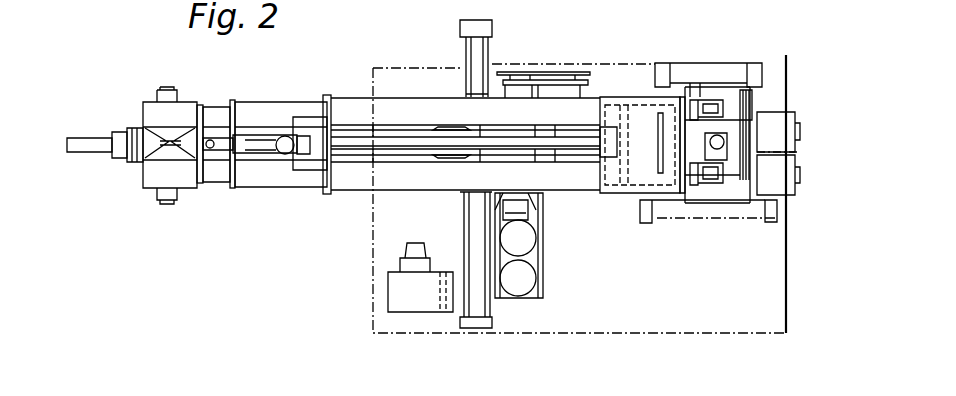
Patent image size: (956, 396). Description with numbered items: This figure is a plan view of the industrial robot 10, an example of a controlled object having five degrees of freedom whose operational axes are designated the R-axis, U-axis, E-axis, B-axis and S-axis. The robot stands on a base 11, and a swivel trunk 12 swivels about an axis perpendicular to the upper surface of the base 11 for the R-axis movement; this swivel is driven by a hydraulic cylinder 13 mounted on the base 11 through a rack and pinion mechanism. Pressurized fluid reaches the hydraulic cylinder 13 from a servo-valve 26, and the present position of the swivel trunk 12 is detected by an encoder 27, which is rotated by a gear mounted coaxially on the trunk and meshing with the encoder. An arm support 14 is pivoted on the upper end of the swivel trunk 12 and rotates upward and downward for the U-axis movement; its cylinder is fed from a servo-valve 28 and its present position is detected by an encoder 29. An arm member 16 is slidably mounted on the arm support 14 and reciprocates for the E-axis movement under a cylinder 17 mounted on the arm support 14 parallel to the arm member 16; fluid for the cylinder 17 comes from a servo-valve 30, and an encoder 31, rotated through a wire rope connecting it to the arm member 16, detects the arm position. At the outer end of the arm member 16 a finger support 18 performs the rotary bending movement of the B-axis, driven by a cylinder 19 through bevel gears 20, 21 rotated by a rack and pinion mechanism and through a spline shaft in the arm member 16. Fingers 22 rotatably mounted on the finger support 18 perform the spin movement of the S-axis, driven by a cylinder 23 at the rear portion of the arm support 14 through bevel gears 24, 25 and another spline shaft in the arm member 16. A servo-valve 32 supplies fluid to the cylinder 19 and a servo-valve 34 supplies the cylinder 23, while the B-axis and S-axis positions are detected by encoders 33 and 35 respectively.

The industrial robot 10 is at (519, 57).
The base 11 is at (632, 303).
The swivel trunk 12 is at (547, 160).
The hydraulic cylinder 13 is at (455, 42).
The arm support 14 is at (577, 115).
The arm member 16 is at (207, 162).
The cylinder 17 is at (350, 140).
The finger support 18 is at (147, 129).
The cylinder 19 is at (733, 70).
The bevel gear 20 is at (710, 100).
The bevel gear 21 is at (697, 103).
The fingers 22 is at (97, 144).
The cylinder 23 is at (756, 213).
The bevel gear 24 is at (712, 185).
The bevel gear 25 is at (705, 185).
The servo-valve 26 is at (406, 248).
The encoder 27 is at (537, 247).
The servo-valve 28 is at (540, 214).
The encoder 29 is at (577, 84).
The servo-valve 30 is at (660, 220).
The encoder 31 is at (786, 86).
The servo-valve 32 is at (625, 110).
The encoder 33 is at (788, 126).
The servo-valve 34 is at (646, 180).
The encoder 35 is at (790, 168).